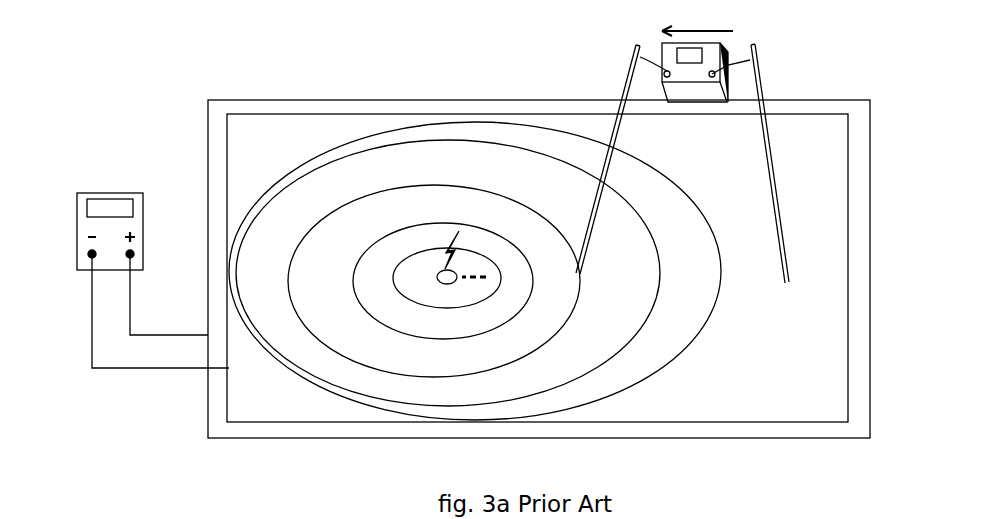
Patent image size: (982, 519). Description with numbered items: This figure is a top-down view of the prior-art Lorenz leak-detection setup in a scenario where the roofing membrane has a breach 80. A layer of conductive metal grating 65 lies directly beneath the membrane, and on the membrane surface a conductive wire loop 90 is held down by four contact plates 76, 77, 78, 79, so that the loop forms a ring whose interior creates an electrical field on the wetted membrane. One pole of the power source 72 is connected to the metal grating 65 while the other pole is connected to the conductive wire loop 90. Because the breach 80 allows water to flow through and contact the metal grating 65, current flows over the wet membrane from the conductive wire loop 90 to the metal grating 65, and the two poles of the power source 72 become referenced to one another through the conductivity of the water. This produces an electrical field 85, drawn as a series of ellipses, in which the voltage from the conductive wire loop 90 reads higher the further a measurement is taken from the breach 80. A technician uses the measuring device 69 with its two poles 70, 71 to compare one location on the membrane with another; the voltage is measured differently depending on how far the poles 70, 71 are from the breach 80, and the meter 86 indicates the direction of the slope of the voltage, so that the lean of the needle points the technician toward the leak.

The conductive metal grating 65 is at (218, 385).
The contact plate 76 is at (232, 417).
The contact plate 77 is at (229, 116).
The contact plate 78 is at (845, 117).
The contact plate 79 is at (845, 420).
The conductive wire loop 90 is at (230, 217).
The electrical field 85 is at (662, 273).
The breach 80 is at (453, 270).
The power source 72 is at (146, 225).
The pole 70 is at (627, 62).
The pole 71 is at (762, 52).
The meter 86 is at (678, 45).
The measuring device 69 is at (730, 75).